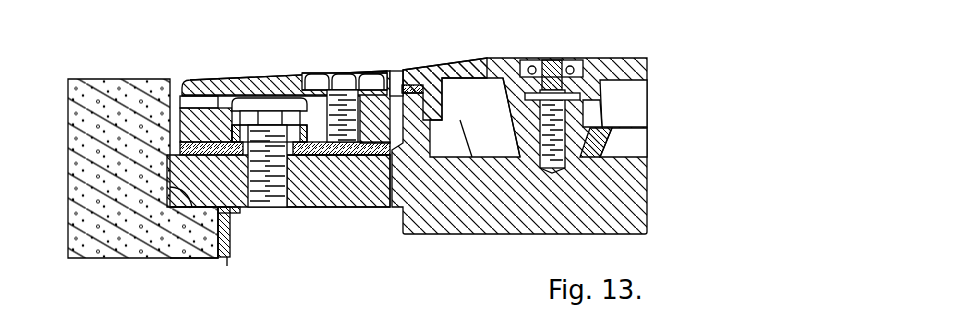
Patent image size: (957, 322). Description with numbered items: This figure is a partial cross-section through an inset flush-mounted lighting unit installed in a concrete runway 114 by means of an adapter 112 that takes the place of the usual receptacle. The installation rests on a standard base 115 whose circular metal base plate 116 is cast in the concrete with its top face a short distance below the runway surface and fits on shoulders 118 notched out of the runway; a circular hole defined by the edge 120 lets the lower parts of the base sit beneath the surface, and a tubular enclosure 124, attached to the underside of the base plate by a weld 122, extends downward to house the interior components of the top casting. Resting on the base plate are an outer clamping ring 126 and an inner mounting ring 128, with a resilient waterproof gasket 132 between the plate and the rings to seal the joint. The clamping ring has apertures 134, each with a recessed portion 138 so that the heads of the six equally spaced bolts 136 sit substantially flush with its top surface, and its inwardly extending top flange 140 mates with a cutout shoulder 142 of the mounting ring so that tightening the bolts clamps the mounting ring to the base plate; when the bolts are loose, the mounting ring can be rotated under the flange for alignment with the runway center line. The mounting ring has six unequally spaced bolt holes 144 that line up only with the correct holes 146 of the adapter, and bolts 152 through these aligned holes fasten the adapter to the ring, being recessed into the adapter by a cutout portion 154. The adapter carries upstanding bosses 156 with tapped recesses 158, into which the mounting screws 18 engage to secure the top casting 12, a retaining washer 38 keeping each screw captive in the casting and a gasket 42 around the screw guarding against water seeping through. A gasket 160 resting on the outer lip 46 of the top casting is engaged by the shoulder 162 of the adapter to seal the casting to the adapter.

The top casting 12 is at (488, 63).
The mounting screws 18 is at (562, 70).
The retaining washer 38 is at (580, 98).
The gasket 42 is at (537, 66).
The outer lip 46 is at (407, 85).
The adapter 112 is at (246, 83).
The concrete runway 114 is at (78, 120).
The base 115 is at (353, 200).
The base plate 116 is at (193, 232).
The shoulders 118 is at (170, 187).
The edge 120 is at (224, 240).
The weld 122 is at (236, 212).
The tubular enclosure 124 is at (235, 270).
The outer clamping ring 126 is at (188, 127).
The inner mounting ring 128 is at (322, 155).
The gasket 132 is at (180, 150).
The apertures 134 is at (250, 160).
The bolts 136 is at (267, 110).
The recessed portion 138 is at (218, 81).
The top flange 140 is at (270, 159).
The cutout shoulder 142 is at (303, 160).
The bolt holes 144 is at (368, 78).
The holes 146 is at (343, 80).
The bolts 152 is at (345, 75).
The cutout portion 154 is at (308, 84).
The upstanding bosses 156 is at (600, 137).
The tapped recesses 158 is at (543, 148).
The gasket 160 is at (423, 113).
The shoulder 162 is at (475, 117).